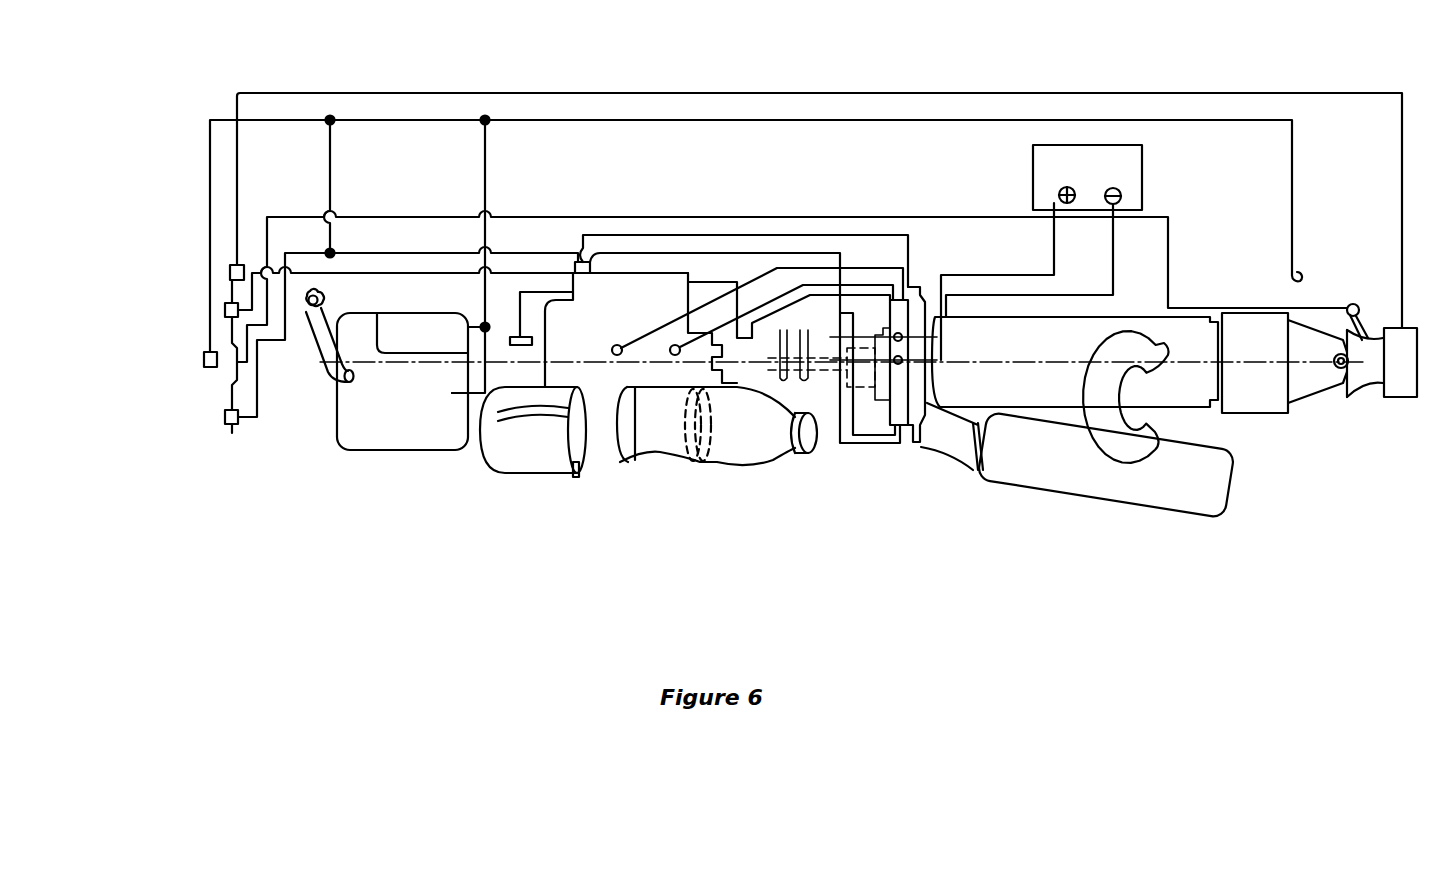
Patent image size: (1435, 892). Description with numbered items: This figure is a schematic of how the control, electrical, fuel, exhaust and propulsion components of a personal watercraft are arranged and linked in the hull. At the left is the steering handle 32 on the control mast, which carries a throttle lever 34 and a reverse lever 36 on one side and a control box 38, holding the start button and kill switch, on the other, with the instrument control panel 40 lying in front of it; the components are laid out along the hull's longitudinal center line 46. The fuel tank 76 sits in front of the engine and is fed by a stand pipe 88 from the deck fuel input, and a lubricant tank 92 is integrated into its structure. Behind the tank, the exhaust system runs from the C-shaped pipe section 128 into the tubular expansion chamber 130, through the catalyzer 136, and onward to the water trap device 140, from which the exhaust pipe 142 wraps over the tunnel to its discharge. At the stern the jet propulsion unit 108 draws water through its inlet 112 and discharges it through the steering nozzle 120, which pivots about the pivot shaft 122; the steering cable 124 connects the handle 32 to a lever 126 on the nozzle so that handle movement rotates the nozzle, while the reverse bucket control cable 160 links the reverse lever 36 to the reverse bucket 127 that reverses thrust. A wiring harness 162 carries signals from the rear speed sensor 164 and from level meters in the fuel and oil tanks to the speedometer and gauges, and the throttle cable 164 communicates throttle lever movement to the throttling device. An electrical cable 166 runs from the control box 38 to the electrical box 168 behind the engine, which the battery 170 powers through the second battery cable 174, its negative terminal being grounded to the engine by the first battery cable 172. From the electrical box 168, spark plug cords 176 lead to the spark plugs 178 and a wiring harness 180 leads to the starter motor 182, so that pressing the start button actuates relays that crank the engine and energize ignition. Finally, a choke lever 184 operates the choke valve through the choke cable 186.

The steering handle 32 is at (228, 392).
The throttle lever 34 is at (225, 310).
The reverse lever 36 is at (230, 272).
The control box 38 is at (224, 426).
The instrument control panel 40 is at (204, 360).
The longitudinal center line 46 is at (392, 368).
The fuel tank 76 is at (415, 454).
The stand pipe 88 is at (320, 335).
The lubricant tank 92 is at (410, 333).
The jet propulsion unit 108 is at (1323, 318).
The inlet 112 is at (1246, 368).
The steering nozzle 120 is at (1338, 372).
The pivot shaft 122 is at (1370, 398).
The steering cable 124 is at (368, 213).
The lever 126 is at (1355, 303).
The reverse bucket 127 is at (1400, 392).
The C-shaped pipe section 128 is at (528, 457).
The expansion chamber 130 is at (668, 457).
The catalyzer 136 is at (724, 450).
The water trap device 140 is at (1030, 475).
The exhaust pipe 142 is at (1121, 440).
The reverse bucket control cable 160 is at (506, 90).
The wiring harness 162 is at (629, 116).
The throttle cable 164 is at (411, 270).
The electrical cable 166 is at (718, 250).
The electrical box 168 is at (897, 402).
The battery 170 is at (1146, 172).
The first battery cable 172 is at (1004, 293).
The second battery cable 174 is at (971, 273).
The spark plug cords 176 is at (881, 280).
The spark plugs 178 is at (671, 345).
The wiring harness 180 is at (653, 230).
The starter motor 182 is at (592, 259).
The choke lever 184 is at (519, 352).
The choke cable 186 is at (538, 288).